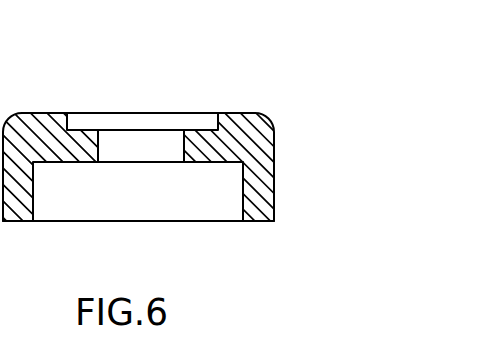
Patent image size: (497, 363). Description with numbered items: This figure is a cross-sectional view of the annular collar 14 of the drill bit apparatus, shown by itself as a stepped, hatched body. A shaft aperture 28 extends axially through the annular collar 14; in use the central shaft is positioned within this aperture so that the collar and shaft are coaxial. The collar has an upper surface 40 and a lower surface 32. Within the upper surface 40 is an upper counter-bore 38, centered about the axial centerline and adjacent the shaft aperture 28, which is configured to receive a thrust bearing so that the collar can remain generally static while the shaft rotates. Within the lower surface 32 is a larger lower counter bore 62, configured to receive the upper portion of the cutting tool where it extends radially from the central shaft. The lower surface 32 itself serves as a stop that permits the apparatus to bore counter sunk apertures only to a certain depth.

The annular collar 14 is at (274, 167).
The shaft aperture 28 is at (181, 142).
The lower surface 32 is at (260, 223).
The upper counter-bore 38 is at (194, 131).
The upper surface 40 is at (245, 112).
The lower counter bore 62 is at (243, 183).